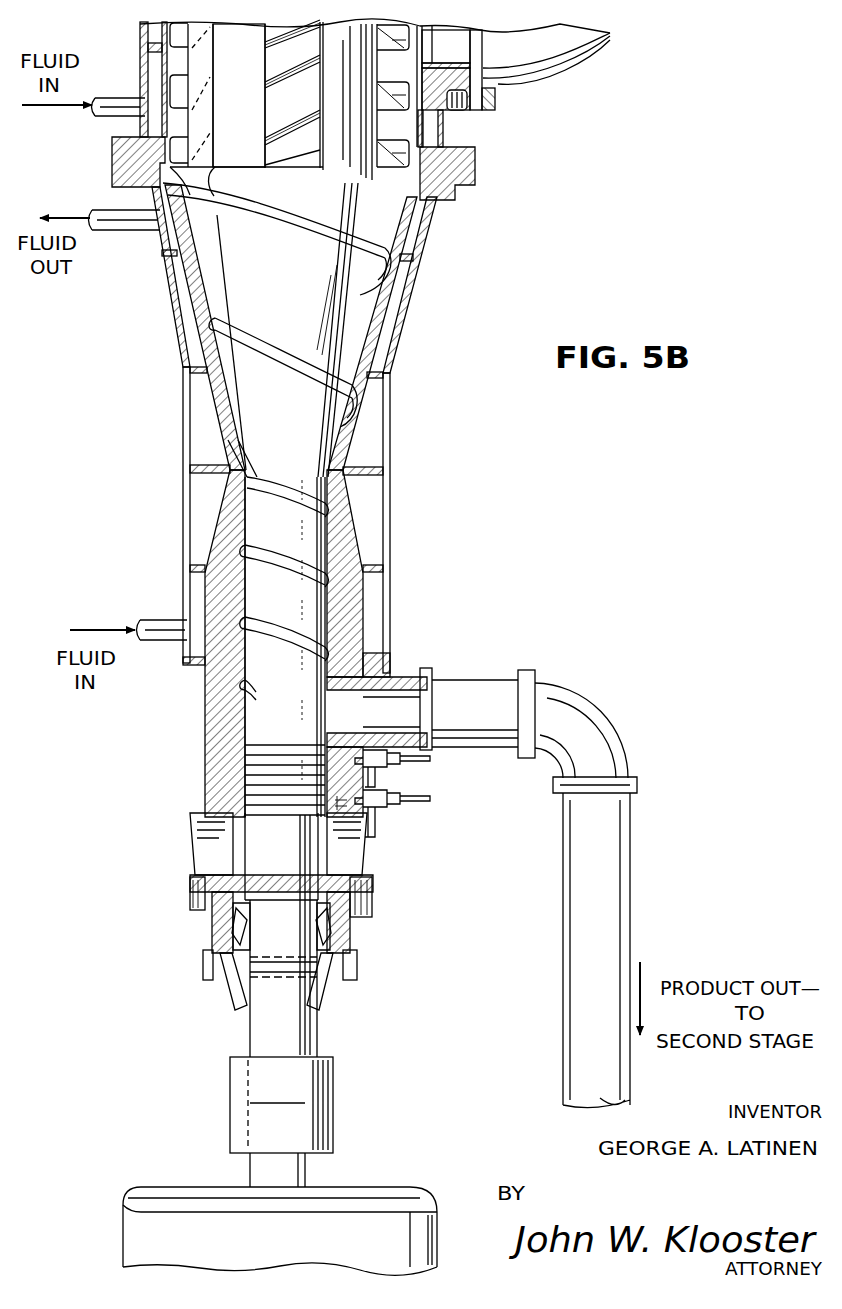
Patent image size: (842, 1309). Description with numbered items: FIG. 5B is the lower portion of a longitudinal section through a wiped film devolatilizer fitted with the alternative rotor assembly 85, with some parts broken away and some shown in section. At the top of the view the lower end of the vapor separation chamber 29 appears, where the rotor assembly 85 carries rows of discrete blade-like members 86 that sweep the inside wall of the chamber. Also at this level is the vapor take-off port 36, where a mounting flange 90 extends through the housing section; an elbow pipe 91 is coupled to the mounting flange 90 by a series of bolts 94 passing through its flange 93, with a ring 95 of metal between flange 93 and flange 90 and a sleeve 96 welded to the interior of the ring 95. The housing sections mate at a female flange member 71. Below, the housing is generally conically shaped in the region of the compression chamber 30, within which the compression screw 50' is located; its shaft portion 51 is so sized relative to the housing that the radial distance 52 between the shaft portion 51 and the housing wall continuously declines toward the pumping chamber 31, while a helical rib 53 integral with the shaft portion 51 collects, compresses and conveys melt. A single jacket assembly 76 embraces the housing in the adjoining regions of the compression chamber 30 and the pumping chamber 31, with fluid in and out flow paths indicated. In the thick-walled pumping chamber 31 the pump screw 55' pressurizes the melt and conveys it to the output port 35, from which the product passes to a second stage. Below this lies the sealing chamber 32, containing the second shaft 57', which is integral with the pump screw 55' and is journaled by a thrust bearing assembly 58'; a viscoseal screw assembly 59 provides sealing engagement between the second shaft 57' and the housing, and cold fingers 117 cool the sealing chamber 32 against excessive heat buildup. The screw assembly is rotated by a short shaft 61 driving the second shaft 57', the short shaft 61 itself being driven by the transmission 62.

The vapor separation chamber 29 is at (140, 38).
The rotor assembly 85 is at (248, 123).
The blade-like members 86 is at (293, 82).
The mounting flange 90 is at (407, 72).
The flange 93 is at (480, 41).
The sleeve 96 is at (432, 63).
The vapor take-off port 36 is at (458, 43).
The ring 95 is at (462, 110).
The bolts 94 is at (496, 105).
The elbow pipe 91 is at (565, 45).
The female flange member 71 is at (468, 160).
The compression chamber 30 is at (170, 318).
The jacket assembly 76 is at (390, 437).
The radial distance 52 is at (402, 221).
The compression screw 50' is at (388, 330).
The shaft portion 51 is at (300, 304).
The helical rib 53 is at (333, 240).
The pumping chamber 31 is at (182, 572).
The sealing chamber 32 is at (203, 777).
The pump screw 55' is at (284, 647).
The output port 35 is at (402, 685).
The viscoseal screw assembly 59 is at (282, 752).
The cold fingers 117 is at (400, 795).
The second shaft 57' is at (251, 935).
The thrust bearing assembly 58' is at (257, 942).
The short shaft 61 is at (265, 1170).
The transmission 62 is at (148, 1232).